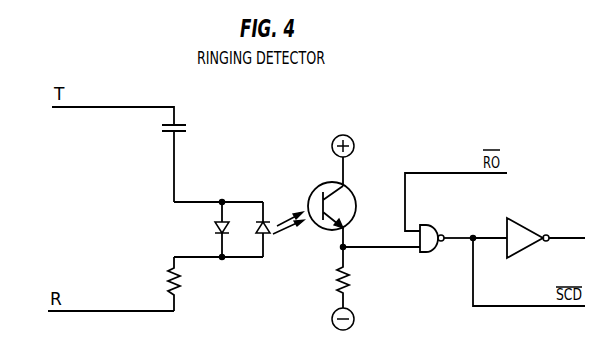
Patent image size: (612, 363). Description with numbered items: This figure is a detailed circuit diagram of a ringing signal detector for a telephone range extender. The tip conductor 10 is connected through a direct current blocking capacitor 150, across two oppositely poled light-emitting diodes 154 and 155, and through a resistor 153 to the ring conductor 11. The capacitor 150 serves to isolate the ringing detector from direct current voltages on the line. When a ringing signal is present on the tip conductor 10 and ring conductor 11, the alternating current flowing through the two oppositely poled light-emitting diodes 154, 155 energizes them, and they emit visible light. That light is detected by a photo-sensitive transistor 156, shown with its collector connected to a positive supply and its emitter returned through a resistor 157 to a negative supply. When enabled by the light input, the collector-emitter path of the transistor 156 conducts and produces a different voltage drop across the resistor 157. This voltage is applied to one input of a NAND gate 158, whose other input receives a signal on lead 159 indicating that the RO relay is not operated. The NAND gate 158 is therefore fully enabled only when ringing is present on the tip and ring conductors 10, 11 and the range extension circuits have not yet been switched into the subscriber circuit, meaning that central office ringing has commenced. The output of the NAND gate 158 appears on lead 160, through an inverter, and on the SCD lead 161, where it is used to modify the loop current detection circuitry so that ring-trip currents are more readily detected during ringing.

The tip conductor 10 is at (84, 107).
The ring conductor 11 is at (78, 311).
The direct current blocking capacitor 150 is at (186, 160).
The resistor 153 is at (188, 284).
The light-emitting diode 154 is at (208, 229).
The light-emitting diode 155 is at (251, 229).
The photo-sensitive transistor 156 is at (349, 191).
The resistor 157 is at (357, 277).
The NAND gate 158 is at (446, 252).
The lead 159 is at (445, 174).
The lead 160 is at (552, 241).
The SCD lead 161 is at (532, 307).